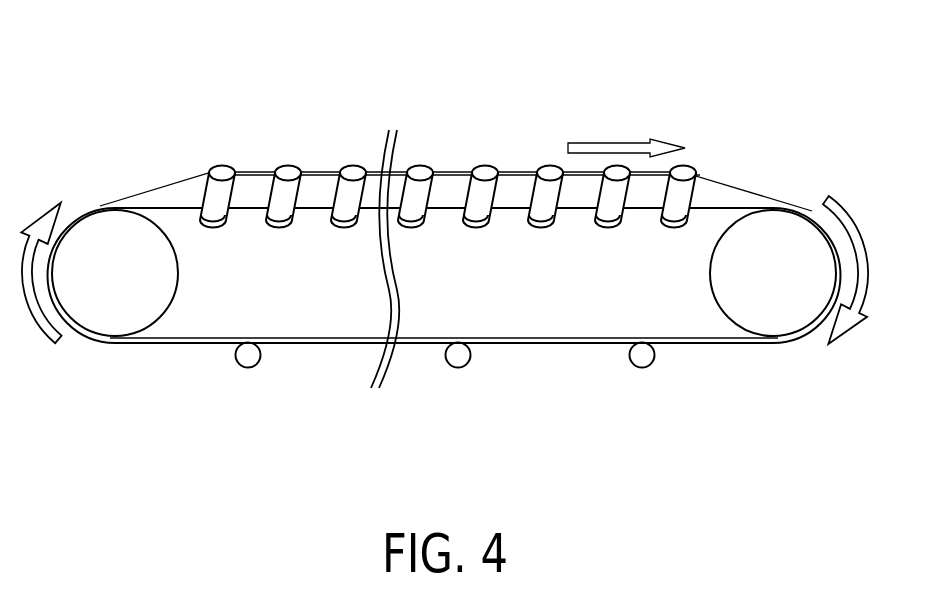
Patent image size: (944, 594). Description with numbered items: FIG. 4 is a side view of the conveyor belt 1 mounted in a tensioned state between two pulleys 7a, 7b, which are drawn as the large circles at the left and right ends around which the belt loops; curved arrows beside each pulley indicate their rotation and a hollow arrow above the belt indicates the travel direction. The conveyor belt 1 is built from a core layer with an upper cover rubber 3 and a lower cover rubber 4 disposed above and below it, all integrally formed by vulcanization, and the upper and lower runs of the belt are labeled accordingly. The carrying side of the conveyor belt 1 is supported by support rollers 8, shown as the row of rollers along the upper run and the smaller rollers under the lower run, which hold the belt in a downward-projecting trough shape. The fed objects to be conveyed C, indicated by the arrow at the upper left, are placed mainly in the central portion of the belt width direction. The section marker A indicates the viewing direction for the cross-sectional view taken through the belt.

The conveyor belt 1 is at (720, 182).
The upper cover rubber 3 is at (572, 342).
The lower cover rubber 4 is at (613, 337).
The pulley 7a is at (113, 312).
The pulley 7b is at (753, 307).
The support rollers 8 is at (552, 172).
The fed objects to be conveyed C is at (252, 162).
The section line A is at (504, 148).